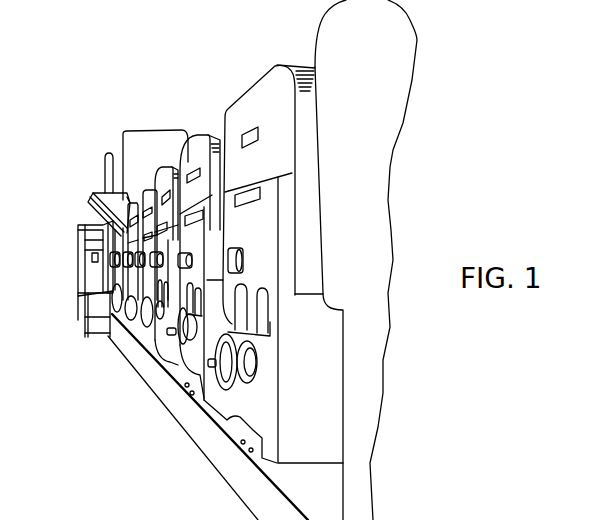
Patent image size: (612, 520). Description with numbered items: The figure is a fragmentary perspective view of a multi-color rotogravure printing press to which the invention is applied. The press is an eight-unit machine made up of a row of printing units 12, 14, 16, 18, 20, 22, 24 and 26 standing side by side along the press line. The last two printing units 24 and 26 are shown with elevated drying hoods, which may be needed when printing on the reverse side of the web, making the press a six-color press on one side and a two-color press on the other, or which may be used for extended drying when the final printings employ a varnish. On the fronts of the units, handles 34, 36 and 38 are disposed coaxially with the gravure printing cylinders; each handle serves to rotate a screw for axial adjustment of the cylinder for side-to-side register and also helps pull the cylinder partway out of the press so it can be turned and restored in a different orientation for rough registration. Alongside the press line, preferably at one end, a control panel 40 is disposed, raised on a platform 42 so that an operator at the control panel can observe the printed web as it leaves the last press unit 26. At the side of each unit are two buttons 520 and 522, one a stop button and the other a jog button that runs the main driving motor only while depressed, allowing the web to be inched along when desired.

The printing unit 12 is at (405, 83).
The printing unit 14 is at (257, 83).
The printing unit 16 is at (202, 137).
The printing unit 18 is at (171, 166).
The printing unit 20 is at (148, 190).
The printing unit 22 is at (131, 204).
The printing unit 24 is at (127, 133).
The printing unit 26 is at (113, 162).
The handle 34 is at (227, 400).
The handle 36 is at (177, 377).
The handle 38 is at (153, 362).
The control panel 40 is at (83, 270).
The platform 42 is at (80, 310).
The button 520 is at (244, 445).
The button 522 is at (250, 453).